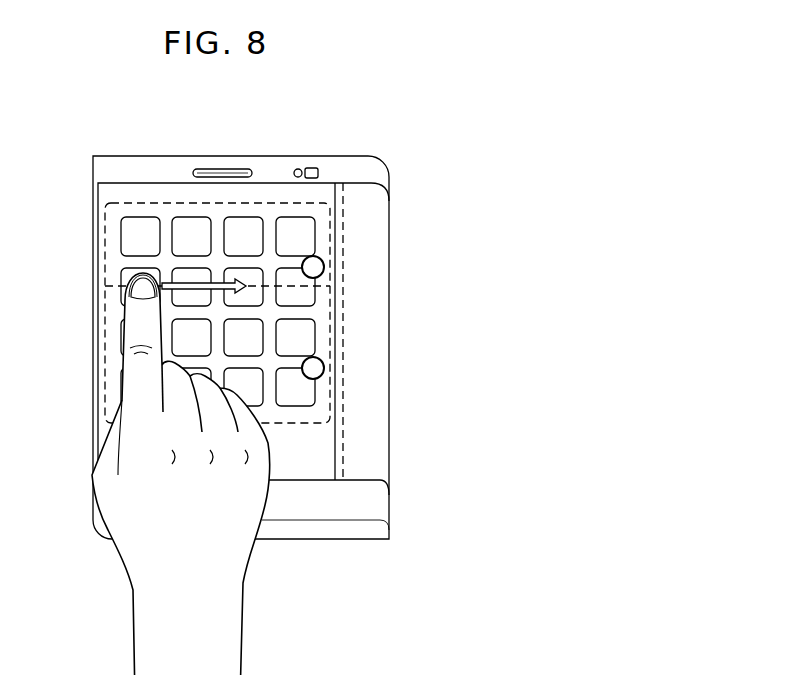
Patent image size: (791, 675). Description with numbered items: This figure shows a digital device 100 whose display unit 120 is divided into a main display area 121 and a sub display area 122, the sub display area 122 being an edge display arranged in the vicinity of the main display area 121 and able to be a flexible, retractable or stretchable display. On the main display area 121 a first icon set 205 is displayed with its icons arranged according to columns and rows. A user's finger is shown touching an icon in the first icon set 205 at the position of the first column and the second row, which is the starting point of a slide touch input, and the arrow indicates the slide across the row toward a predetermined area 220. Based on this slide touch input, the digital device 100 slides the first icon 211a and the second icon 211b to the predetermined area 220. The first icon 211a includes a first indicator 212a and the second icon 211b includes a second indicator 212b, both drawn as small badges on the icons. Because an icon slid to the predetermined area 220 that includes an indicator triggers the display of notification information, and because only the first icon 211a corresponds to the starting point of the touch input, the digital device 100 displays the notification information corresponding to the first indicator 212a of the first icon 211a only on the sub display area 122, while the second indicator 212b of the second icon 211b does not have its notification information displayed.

The digital device 100 is at (117, 156).
The display unit 120 is at (98, 362).
The main display area 121 is at (143, 194).
The sub display area 122 is at (366, 462).
The first icon set 205 is at (330, 218).
The first icon 211a is at (305, 298).
The second icon 211b is at (305, 400).
The first indicator 212a is at (324, 265).
The second indicator 212b is at (324, 366).
The predetermined area 220 is at (343, 432).